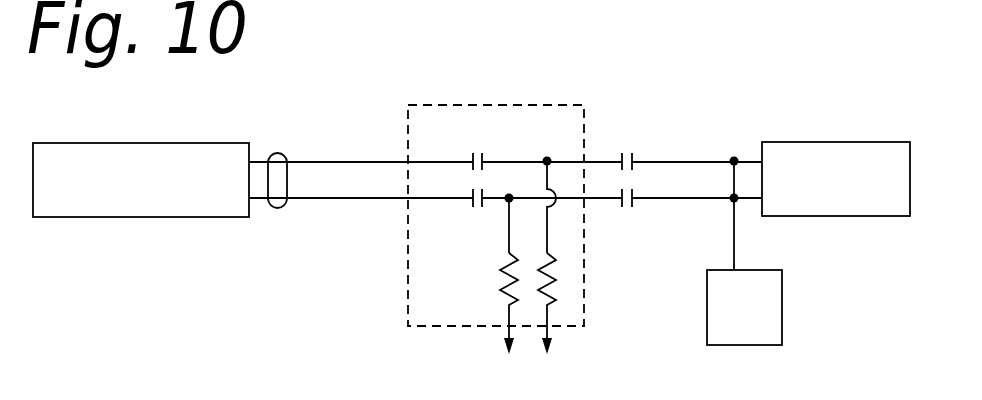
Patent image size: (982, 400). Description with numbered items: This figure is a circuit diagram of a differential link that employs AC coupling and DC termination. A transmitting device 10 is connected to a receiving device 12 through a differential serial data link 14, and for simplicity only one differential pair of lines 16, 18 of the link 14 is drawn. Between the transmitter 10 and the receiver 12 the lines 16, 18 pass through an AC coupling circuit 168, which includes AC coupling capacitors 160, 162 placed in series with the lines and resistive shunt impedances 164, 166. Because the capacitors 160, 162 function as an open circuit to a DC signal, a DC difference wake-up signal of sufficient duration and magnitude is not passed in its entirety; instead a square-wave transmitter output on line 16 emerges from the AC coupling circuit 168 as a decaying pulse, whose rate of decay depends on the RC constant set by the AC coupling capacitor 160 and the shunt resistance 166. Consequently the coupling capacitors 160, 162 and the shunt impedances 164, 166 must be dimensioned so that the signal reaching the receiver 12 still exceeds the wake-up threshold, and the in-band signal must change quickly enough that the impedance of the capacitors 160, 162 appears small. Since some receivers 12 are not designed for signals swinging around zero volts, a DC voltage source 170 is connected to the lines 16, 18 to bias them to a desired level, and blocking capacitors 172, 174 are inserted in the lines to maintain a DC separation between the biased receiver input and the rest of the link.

The transmitting device 10 is at (118, 143).
The receiving device 12 is at (800, 142).
The differential serial data link 14 is at (276, 151).
The line 16 is at (361, 162).
The line 18 is at (352, 200).
The AC coupling capacitor 160 is at (471, 155).
The AC coupling capacitor 162 is at (470, 205).
The resistive shunt impedance 164 is at (500, 271).
The resistive shunt impedance 166 is at (556, 282).
The AC coupling circuit 168 is at (568, 94).
The DC voltage source 170 is at (782, 314).
The blocking capacitor 172 is at (634, 202).
The blocking capacitor 174 is at (633, 157).